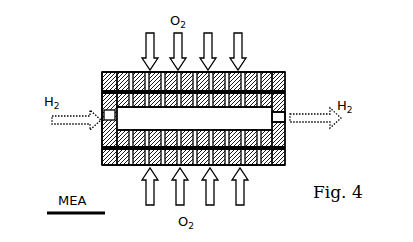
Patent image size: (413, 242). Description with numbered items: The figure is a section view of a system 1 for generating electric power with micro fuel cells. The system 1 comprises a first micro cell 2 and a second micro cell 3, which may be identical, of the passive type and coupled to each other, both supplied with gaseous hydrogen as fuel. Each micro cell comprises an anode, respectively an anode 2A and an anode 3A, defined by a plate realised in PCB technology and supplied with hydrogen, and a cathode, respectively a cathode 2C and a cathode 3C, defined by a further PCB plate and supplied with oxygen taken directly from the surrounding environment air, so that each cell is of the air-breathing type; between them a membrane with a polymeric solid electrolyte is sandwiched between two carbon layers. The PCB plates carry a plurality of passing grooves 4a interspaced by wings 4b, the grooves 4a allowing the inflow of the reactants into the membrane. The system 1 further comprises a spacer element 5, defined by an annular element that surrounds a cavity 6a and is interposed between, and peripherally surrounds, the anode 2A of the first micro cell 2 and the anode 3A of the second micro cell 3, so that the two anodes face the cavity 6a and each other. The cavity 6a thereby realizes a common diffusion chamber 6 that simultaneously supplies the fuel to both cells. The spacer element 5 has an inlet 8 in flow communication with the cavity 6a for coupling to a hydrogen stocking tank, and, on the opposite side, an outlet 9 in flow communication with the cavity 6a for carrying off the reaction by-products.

The system 1 is at (272, 42).
The first micro cell 2 is at (98, 74).
The anode of the first micro cell 2A is at (287, 95).
The cathode of the first micro cell 2C is at (290, 74).
The second micro cell 3 is at (105, 160).
The anode of the second micro cell 3A is at (288, 148).
The cathode of the second micro cell 3C is at (287, 168).
The passing grooves 4a is at (135, 72).
The wings 4b is at (263, 168).
The spacer element 5 is at (98, 135).
The common diffusion chamber 6 is at (253, 124).
The cavity 6a is at (148, 128).
The inlet 8 is at (100, 112).
The outlet 9 is at (284, 124).